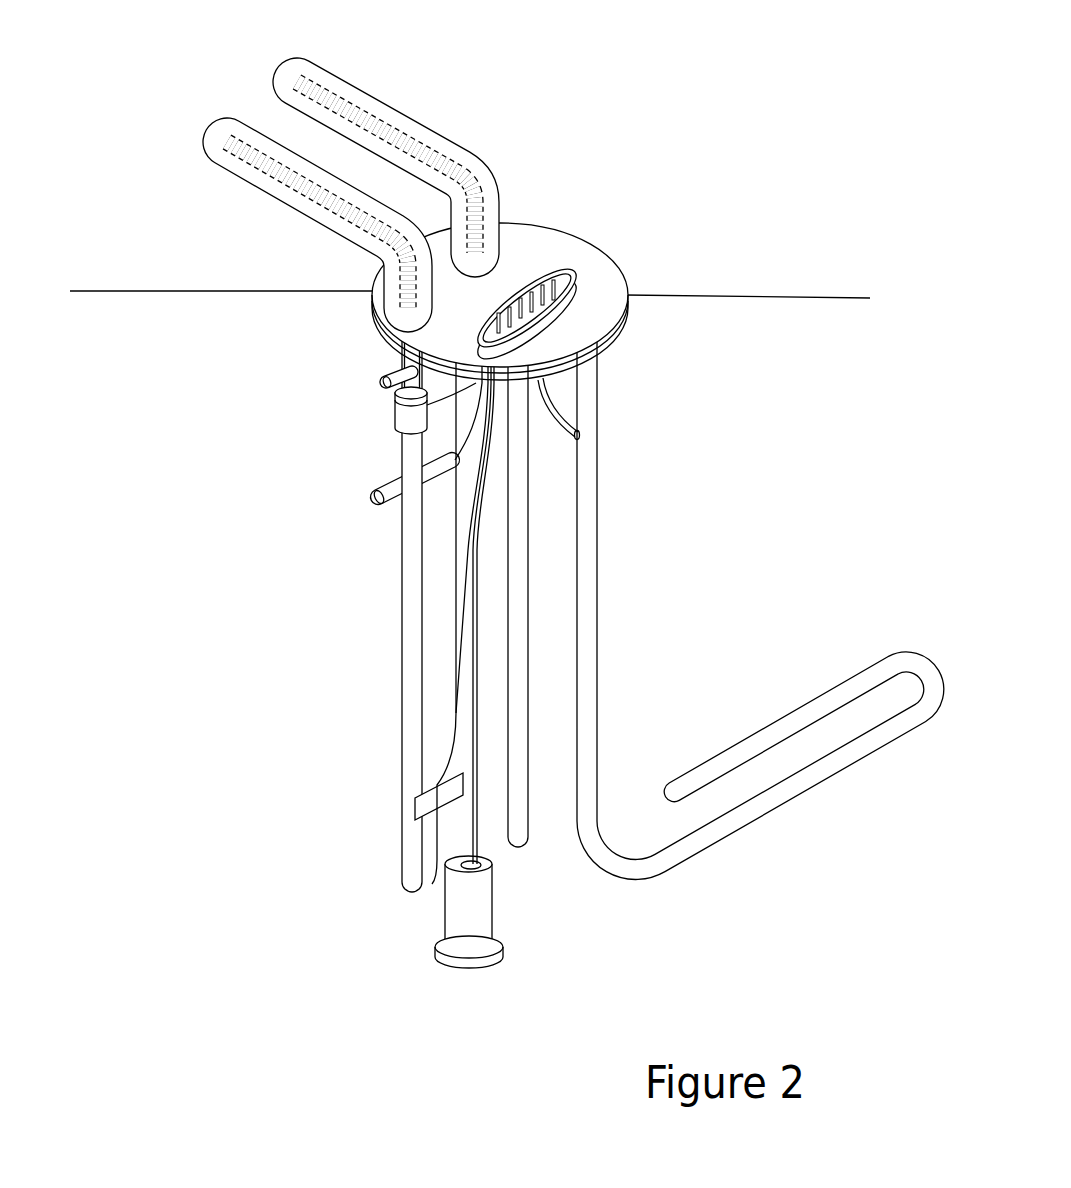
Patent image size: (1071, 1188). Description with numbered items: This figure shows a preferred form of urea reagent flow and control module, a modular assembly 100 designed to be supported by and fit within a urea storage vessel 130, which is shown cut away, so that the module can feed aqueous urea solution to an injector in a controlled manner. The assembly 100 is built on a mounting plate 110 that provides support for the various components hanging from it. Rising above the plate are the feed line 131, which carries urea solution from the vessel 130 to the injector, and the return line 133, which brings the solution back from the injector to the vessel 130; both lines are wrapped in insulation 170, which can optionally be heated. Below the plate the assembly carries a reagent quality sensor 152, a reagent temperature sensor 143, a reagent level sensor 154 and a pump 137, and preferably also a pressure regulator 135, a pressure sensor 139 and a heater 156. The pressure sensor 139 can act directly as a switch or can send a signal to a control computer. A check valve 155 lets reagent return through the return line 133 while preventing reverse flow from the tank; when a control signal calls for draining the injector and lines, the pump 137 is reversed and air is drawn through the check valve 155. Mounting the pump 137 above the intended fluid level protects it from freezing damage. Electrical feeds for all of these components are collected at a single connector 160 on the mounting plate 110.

The modular assembly 100 is at (623, 315).
The mounting plate 110 is at (522, 243).
The vessel 130 is at (717, 295).
The feed line 131 is at (307, 70).
The return line 133 is at (222, 150).
The pressure regulator 135 is at (392, 416).
The pump 137 is at (438, 958).
The pressure sensor 139 is at (397, 390).
The reagent temperature sensor 143 is at (432, 884).
The reagent quality sensor 152 is at (388, 488).
The reagent level sensor 154 is at (528, 848).
The check valve 155 is at (393, 365).
The heater 156 is at (730, 748).
The connector 160 is at (560, 270).
The insulation 170 is at (228, 118).